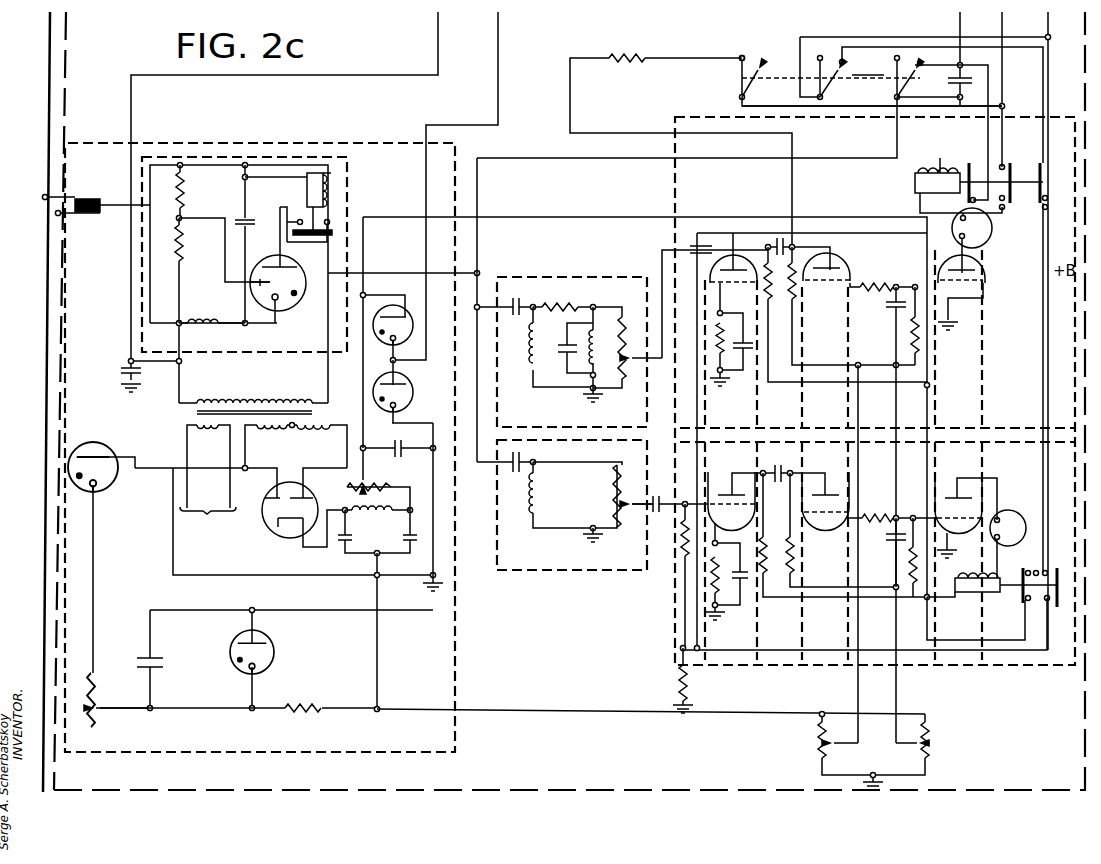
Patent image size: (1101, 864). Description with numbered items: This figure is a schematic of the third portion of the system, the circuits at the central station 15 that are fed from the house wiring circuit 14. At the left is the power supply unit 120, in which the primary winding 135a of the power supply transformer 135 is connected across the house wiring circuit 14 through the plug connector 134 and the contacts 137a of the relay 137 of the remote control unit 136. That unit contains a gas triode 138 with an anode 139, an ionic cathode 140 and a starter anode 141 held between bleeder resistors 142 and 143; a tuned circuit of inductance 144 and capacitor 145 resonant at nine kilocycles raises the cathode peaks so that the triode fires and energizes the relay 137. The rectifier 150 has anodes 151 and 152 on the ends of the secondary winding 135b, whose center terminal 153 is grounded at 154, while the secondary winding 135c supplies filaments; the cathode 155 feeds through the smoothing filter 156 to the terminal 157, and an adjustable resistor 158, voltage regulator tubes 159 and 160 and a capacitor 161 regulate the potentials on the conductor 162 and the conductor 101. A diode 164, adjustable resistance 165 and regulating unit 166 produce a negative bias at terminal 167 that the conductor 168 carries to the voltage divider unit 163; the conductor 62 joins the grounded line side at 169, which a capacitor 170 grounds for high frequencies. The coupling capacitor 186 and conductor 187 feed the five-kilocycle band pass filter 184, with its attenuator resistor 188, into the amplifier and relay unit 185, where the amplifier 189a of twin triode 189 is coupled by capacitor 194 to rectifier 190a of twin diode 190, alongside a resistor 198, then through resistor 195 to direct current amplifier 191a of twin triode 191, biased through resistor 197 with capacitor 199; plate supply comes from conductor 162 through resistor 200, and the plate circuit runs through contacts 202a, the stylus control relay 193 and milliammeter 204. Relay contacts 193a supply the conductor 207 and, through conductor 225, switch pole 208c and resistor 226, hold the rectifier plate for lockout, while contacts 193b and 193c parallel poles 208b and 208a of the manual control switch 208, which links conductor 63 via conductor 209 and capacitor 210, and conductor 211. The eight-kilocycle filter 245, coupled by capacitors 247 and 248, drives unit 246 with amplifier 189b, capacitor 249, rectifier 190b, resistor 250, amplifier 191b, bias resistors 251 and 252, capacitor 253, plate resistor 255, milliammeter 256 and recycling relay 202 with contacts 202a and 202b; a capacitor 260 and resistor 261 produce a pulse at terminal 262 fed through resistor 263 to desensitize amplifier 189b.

The house wiring circuit 14 is at (55, 61).
The central station 15 is at (737, 770).
The conductor 62 is at (438, 60).
The conductor 63 is at (957, 29).
The conductor 101 is at (498, 38).
The power supply unit 120 is at (463, 742).
The plug connector 134 is at (97, 175).
The power supply transformer 135 is at (237, 450).
The primary winding 135a is at (264, 399).
The secondary winding 135b is at (308, 427).
The secondary winding 135c is at (208, 431).
The remote control unit 136 is at (253, 156).
The relay 137 is at (331, 173).
The relay contacts 137a is at (330, 222).
The gas triode 138 is at (262, 275).
The anode 139 is at (288, 269).
The ionic cathode 140 is at (280, 298).
The starter anode 141 is at (278, 283).
The bleeder resistor 142 is at (182, 199).
The bleeder resistor 143 is at (182, 257).
The inductance 144 is at (199, 319).
The capacitor 145 is at (249, 218).
The rectifier 150 is at (262, 506).
The anode 151 is at (280, 497).
The anode 152 is at (312, 497).
The center terminal 153 is at (290, 433).
The ground terminal 154 is at (426, 588).
The cathode 155 is at (288, 530).
The smoothing filter 156 is at (385, 544).
The +B terminal 157 is at (413, 510).
The adjustable resistor 158 is at (382, 485).
The voltage regulator tube 159 is at (412, 286).
The voltage regulator tube 160 is at (412, 398).
The capacitor 161 is at (394, 449).
The conductor 162 is at (554, 219).
The voltage divider unit 163 is at (882, 767).
The diode 164 is at (104, 455).
The adjustable resistance 165 is at (98, 682).
The smoothing and voltage regulating unit 166 is at (322, 663).
The terminal 167 is at (388, 710).
The conductor 168 is at (582, 703).
The connection 169 is at (180, 362).
The capacitor 170 is at (122, 361).
The 5 kc. band pass filter 184 is at (568, 359).
The 5 kc. amplifier and relay unit 185 is at (700, 116).
The coupling capacitor 186 is at (527, 296).
The conductor 187 is at (378, 273).
The resistor 188 is at (563, 297).
The twin triode 189 is at (742, 404).
The 5 kc. amplifier 189a is at (722, 252).
The 8 kc. amplifier 189b is at (710, 488).
The twin diode 190 is at (836, 404).
The rectifier 190a is at (842, 260).
The rectifier 190b is at (834, 504).
The twin triode 191 is at (996, 358).
The direct current amplifier 191a is at (982, 276).
The direct current amplifier 191b is at (966, 508).
The stylus control relay 193 is at (967, 349).
The relay contacts 193a is at (998, 167).
The relay contacts 193b is at (1048, 183).
The relay contacts 193c is at (973, 166).
The coupling capacitor 194 is at (768, 241).
The resistor 195 is at (898, 264).
The resistor 197 is at (908, 334).
The resistor 198 is at (796, 300).
The capacitor 199 is at (890, 310).
The coupling resistor 200 is at (776, 316).
The recycling control relay 202 is at (880, 598).
The relay contacts 202a is at (1030, 606).
The relay contacts 202b is at (1058, 574).
The milliammeter 204 is at (984, 239).
The conductor 207 is at (1000, 29).
The manually actuable control switch 208 is at (871, 128).
The switch pole 208a is at (907, 85).
The switch pole 208b is at (830, 92).
The switch pole 208c is at (750, 92).
The conductor 209 is at (566, 160).
The capacitor 210 is at (980, 78).
The conductor 211 is at (1046, 29).
The conductor 225 is at (809, 109).
The voltage dropping resistor 226 is at (636, 52).
The 8 kc. band pass filter 245 is at (565, 520).
The 8 kc. amplifier and relay unit 246 is at (676, 618).
The coupling capacitor 247 is at (524, 461).
The coupling capacitor 248 is at (664, 487).
The coupling capacitor 249 is at (790, 468).
The resistor 250 is at (882, 514).
The resistor 251 is at (904, 566).
The resistor 252 is at (794, 559).
The capacitor 253 is at (883, 552).
The resistor 255 is at (775, 562).
The milliammeter 256 is at (1010, 531).
The capacitor 260 is at (680, 250).
The resistor 261 is at (689, 690).
The terminal 262 is at (678, 650).
The voltage dropping resistor 263 is at (682, 542).